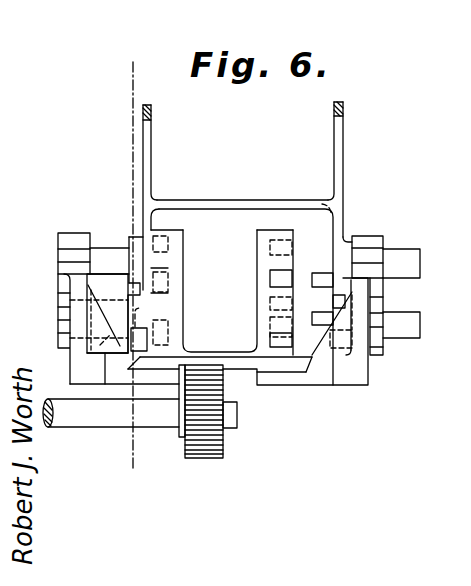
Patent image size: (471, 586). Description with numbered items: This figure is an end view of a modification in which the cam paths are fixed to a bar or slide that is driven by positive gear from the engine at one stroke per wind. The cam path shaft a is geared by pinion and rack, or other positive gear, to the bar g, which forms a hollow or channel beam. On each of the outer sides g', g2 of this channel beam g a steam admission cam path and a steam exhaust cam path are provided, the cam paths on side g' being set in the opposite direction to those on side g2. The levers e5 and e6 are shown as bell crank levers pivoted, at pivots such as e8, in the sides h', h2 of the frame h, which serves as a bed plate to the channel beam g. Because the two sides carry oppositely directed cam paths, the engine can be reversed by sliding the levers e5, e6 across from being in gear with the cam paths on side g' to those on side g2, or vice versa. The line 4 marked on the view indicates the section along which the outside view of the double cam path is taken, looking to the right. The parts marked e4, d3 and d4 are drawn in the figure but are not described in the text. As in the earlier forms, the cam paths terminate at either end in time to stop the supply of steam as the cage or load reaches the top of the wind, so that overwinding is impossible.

The line 4— 4 is at (127, 270).
The lever e5 is at (141, 143).
The lever e6 is at (344, 150).
The plate e4 is at (107, 248).
The pivot e8 is at (85, 347).
The bar g is at (230, 292).
The outer side of the channel beam g' is at (183, 247).
The outer side of the channel beam g2 is at (264, 229).
The slot d3 is at (163, 260).
The slot d4 is at (150, 337).
The frame h is at (219, 358).
The side of the frame h' is at (48, 308).
The side of the frame h2 is at (384, 237).
The cam path shaft a is at (80, 418).